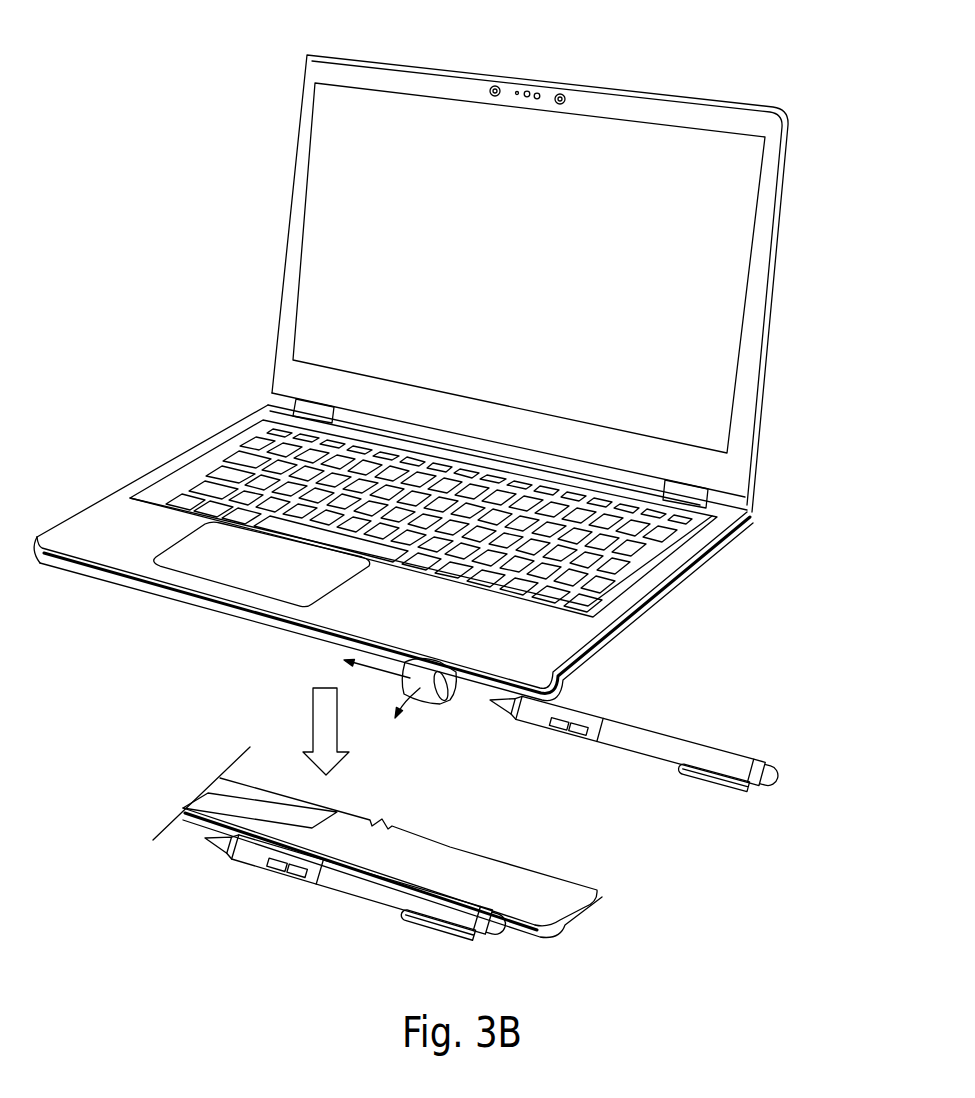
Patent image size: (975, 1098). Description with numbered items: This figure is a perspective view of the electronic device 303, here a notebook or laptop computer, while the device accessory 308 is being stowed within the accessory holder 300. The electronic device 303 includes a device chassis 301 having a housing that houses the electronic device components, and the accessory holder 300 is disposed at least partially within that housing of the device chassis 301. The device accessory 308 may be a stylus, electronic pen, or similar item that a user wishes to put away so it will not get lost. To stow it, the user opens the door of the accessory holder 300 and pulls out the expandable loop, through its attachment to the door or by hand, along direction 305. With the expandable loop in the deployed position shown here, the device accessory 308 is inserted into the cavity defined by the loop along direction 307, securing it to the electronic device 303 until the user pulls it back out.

The accessory holder 300 is at (464, 649).
The device chassis 301 is at (155, 429).
The electronic device 303 is at (113, 86).
The direction 305 is at (417, 688).
The direction 307 is at (518, 938).
The device accessory 308 is at (660, 750).